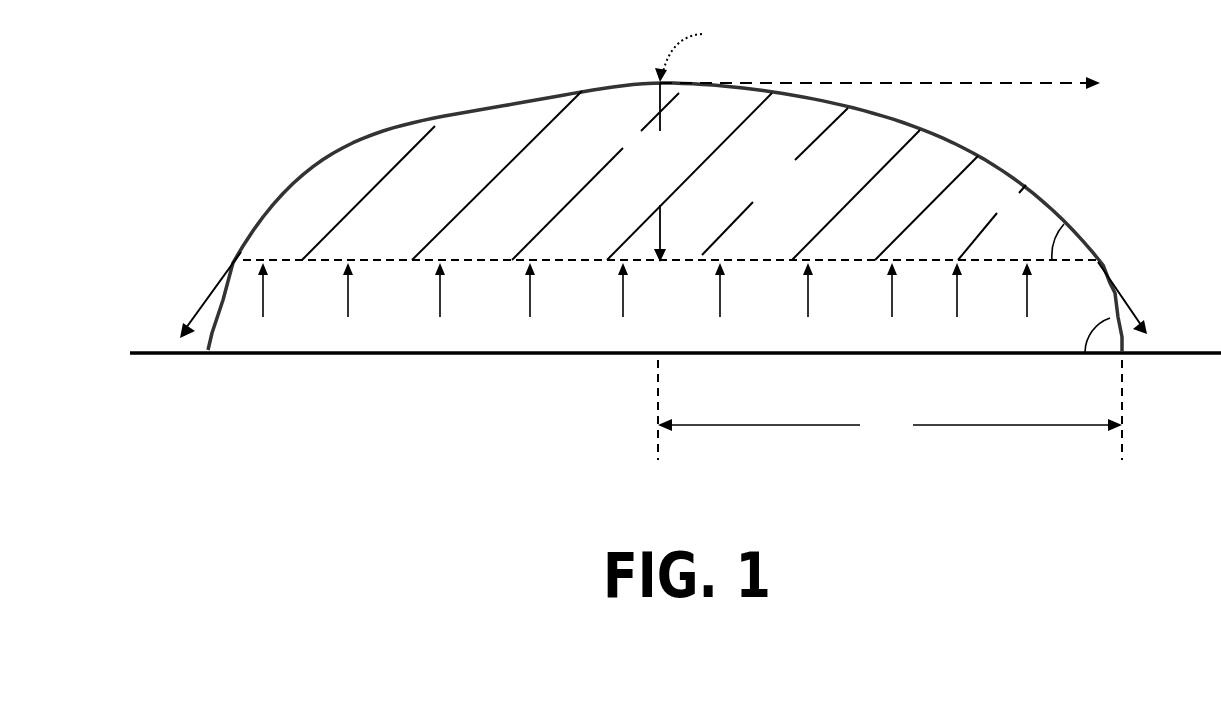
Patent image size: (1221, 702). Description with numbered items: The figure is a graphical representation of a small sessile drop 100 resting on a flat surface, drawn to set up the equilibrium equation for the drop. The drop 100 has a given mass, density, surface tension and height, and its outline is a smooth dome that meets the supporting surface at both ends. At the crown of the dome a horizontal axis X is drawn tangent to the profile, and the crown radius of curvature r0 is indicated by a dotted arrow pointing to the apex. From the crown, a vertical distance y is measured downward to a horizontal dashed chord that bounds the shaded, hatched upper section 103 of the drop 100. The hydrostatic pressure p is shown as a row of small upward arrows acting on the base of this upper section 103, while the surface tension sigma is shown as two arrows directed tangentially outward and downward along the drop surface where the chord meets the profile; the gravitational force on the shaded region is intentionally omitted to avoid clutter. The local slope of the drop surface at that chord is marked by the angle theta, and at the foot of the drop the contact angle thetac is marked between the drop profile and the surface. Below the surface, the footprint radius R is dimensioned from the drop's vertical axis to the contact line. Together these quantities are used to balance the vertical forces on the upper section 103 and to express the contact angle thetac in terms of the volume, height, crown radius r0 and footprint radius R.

The sessile drop 100 is at (441, 78).
The upper section 103 is at (793, 192).
The hydrostatic pressure p is at (645, 294).
The footprint radius R is at (890, 410).
The height coordinate y is at (653, 172).
The horizontal axis X is at (901, 91).
The crown radius of curvature r0 is at (703, 50).
The surface tension sigma is at (668, 295).
The slope angle theta is at (1040, 236).
The contact angle thetac is at (1078, 330).